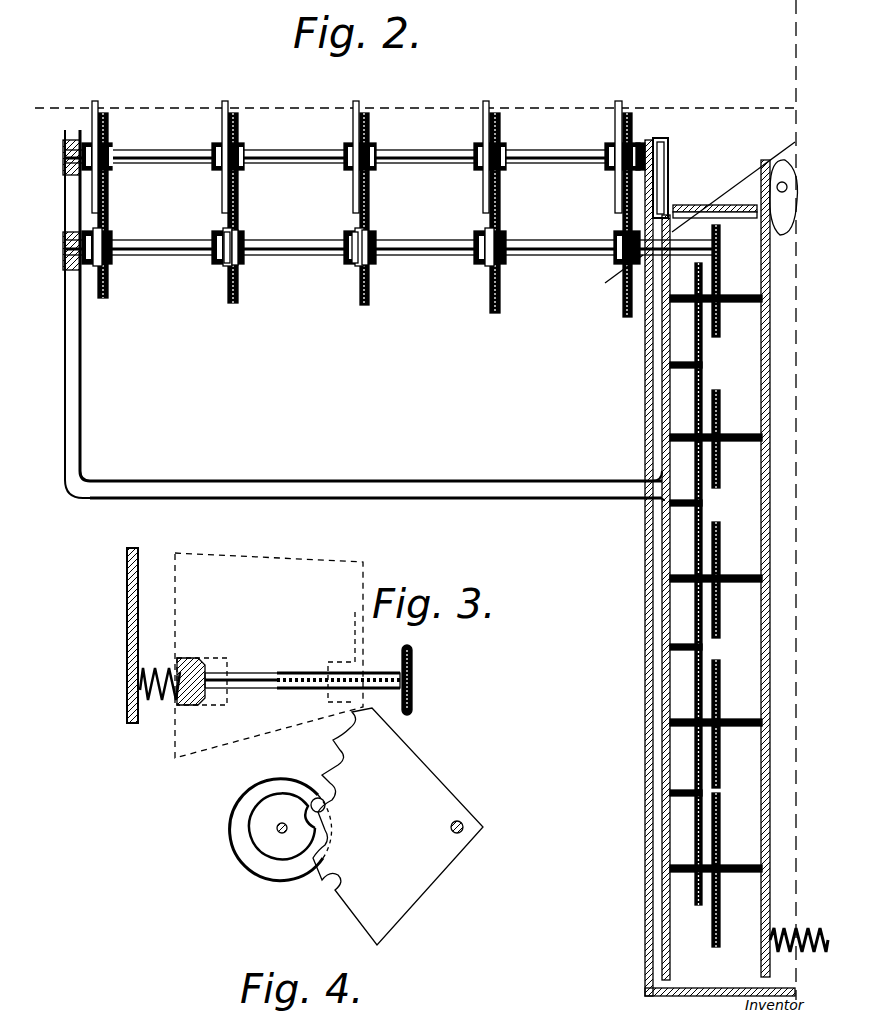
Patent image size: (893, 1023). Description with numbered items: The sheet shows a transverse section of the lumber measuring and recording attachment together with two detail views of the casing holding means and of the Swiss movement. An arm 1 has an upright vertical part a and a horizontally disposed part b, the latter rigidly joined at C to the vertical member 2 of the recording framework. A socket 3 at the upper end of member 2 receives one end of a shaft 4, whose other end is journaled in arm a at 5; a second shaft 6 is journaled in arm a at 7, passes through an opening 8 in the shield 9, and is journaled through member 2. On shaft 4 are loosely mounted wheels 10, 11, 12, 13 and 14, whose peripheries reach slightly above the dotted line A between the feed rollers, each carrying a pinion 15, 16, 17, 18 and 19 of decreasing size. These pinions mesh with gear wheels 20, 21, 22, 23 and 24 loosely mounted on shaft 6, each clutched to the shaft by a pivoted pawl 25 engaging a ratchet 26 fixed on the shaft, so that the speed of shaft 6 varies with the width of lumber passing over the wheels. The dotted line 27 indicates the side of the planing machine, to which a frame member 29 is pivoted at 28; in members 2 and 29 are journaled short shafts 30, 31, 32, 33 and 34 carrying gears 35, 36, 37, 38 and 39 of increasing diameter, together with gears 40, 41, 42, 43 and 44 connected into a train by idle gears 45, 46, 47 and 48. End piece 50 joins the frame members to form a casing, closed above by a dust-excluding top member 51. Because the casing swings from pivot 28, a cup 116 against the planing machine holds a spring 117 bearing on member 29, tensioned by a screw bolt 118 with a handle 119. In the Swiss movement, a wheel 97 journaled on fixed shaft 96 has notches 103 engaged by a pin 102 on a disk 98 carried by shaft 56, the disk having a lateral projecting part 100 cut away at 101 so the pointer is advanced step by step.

In FIG. 2, the arm 1 is at (173, 492).
In FIG. 2, the vertical member 2 is at (663, 552).
In FIG. 2, the socket 3 is at (661, 140).
In FIG. 2, the shaft 4 is at (541, 150).
In FIG. 2, the journal 5 is at (65, 155).
In FIG. 2, the second shaft 6 is at (430, 242).
In FIG. 2, the journal 7 is at (66, 250).
In FIG. 2, the opening 8 is at (619, 283).
In FIG. 2, the shield 9 is at (646, 350).
In FIG. 2, the wheel 10 is at (100, 110).
In FIG. 2, the wheel 11 is at (231, 110).
In FIG. 2, the wheel 12 is at (364, 110).
In FIG. 2, the wheel 13 is at (498, 110).
In FIG. 2, the wheel 14 is at (618, 110).
In FIG. 2, the pinion 15 is at (108, 140).
In FIG. 2, the pinion 16 is at (238, 142).
In FIG. 2, the pinion 17 is at (369, 140).
In FIG. 2, the pinion 18 is at (500, 140).
In FIG. 2, the pinion 19 is at (637, 118).
In FIG. 2, the gear wheel 20 is at (158, 295).
In FIG. 2, the gear wheel 21 is at (240, 296).
In FIG. 2, the gear wheel 22 is at (369, 295).
In FIG. 2, the gear wheel 23 is at (500, 292).
In FIG. 2, the gear wheel 24 is at (625, 296).
In FIG. 2, the pivoted pawl 25 is at (225, 243).
In FIG. 2, the ratchet 26 is at (352, 243).
In FIG. 2, the side of planing machine 27 is at (798, 436).
In FIG. 3, the side of planing machine 27 is at (269, 655).
In FIG. 2, the pivot 28 is at (735, 186).
In FIG. 2, the frame member 29 is at (762, 352).
In FIG. 3, the frame member 29 is at (127, 588).
In FIG. 2, the short shaft 30 is at (738, 296).
In FIG. 2, the short shaft 31 is at (736, 436).
In FIG. 2, the short shaft 32 is at (740, 578).
In FIG. 2, the short shaft 33 is at (740, 718).
In FIG. 2, the short shaft 34 is at (737, 864).
In FIG. 2, the gear 35 is at (721, 323).
In FIG. 2, the gear 36 is at (721, 477).
In FIG. 2, the gear 37 is at (728, 627).
In FIG. 2, the gear 38 is at (721, 772).
In FIG. 2, the gear 39 is at (721, 927).
In FIG. 2, the gear 40 is at (696, 278).
In FIG. 2, the gear 41 is at (694, 412).
In FIG. 2, the gear 42 is at (694, 558).
In FIG. 2, the gear 43 is at (698, 702).
In FIG. 2, the gear 44 is at (690, 852).
In FIG. 2, the idle gear 45 is at (704, 372).
In FIG. 2, the idle gear 46 is at (706, 504).
In FIG. 2, the idle gear 47 is at (705, 647).
In FIG. 2, the idle gear 48 is at (705, 795).
In FIG. 2, the end piece 50 is at (689, 987).
In FIG. 2, the top member 51 is at (720, 206).
In FIG. 4, the shaft 56 is at (278, 832).
In FIG. 4, the fixed shaft 96 is at (462, 820).
In FIG. 4, the wheel 97 is at (398, 826).
In FIG. 4, the disk 98 is at (279, 872).
In FIG. 4, the lateral projecting part 100 is at (272, 800).
In FIG. 4, the cut away portion 101 is at (305, 797).
In FIG. 4, the pin 102 is at (326, 803).
In FIG. 4, the notch 103 is at (333, 850).
In FIG. 3, the cup 116 is at (193, 662).
In FIG. 3, the spring 117 is at (160, 700).
In FIG. 3, the screw bolt 118 is at (376, 672).
In FIG. 3, the handle 119 is at (412, 703).
In FIG. 2, the upright vertical part a is at (81, 370).
In FIG. 2, the horizontally disposed part b is at (333, 492).
In FIG. 2, the dotted line A is at (335, 108).
In FIG. 2, the connection C is at (661, 475).